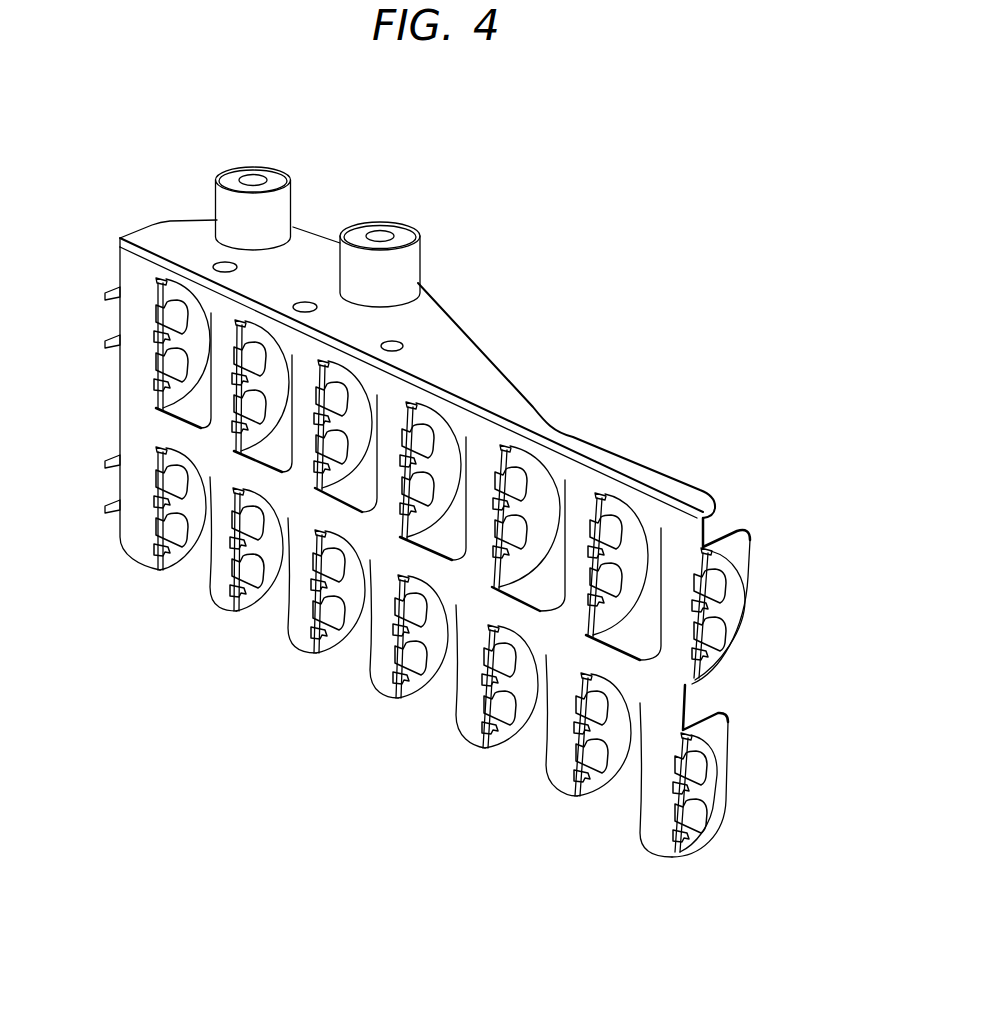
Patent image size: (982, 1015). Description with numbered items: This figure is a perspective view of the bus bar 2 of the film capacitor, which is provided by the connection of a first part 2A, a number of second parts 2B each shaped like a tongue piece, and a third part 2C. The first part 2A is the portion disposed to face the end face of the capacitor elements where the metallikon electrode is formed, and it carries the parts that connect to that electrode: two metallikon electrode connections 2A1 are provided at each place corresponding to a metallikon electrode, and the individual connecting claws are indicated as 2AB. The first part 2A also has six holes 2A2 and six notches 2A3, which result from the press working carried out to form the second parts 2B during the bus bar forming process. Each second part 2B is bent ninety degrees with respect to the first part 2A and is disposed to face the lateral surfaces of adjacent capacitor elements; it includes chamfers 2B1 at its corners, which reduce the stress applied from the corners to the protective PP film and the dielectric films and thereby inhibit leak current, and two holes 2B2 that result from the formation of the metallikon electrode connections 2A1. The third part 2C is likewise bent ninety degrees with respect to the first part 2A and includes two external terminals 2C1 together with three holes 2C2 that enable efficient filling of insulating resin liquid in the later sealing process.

The bus bar 2 is at (712, 204).
The first part 2A is at (143, 425).
The metallikon electrode connections 2A1 is at (108, 293).
The holes 2A2 is at (660, 556).
The notches 2A3 is at (640, 787).
The holding claws 2AB is at (687, 737).
The second parts 2B is at (736, 620).
The chamfers 2B1 is at (720, 713).
The holes 2B2 is at (720, 576).
The third part 2C is at (476, 367).
The external terminals 2C1 is at (278, 207).
The holes 2C2 is at (400, 345).